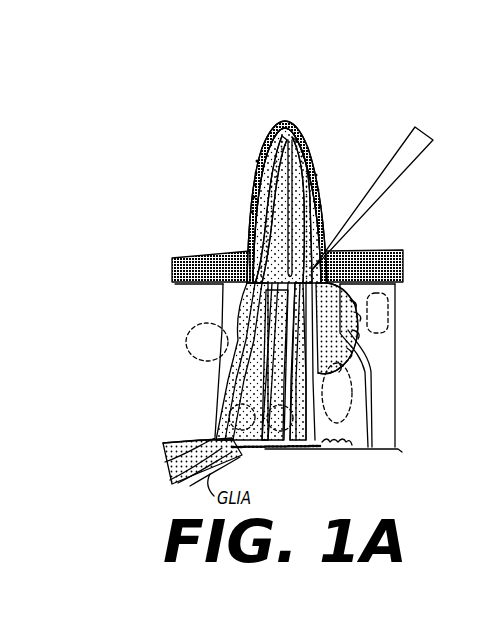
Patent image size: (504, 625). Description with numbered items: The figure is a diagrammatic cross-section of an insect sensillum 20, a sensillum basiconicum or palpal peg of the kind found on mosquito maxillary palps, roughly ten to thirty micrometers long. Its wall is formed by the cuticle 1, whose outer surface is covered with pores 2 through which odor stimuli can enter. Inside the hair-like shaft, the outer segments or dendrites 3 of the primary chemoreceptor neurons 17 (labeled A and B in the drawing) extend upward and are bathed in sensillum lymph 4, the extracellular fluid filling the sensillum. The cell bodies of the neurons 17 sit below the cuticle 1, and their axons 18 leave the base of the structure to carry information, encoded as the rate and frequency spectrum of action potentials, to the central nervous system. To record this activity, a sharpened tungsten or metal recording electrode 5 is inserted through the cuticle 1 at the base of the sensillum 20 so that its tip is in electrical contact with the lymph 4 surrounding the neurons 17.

The sensillum 20 is at (297, 104).
The cuticle 1 is at (259, 157).
The pores 2 is at (259, 173).
The dendrites 3 is at (254, 193).
The sensillum lymph 4 is at (250, 208).
The recording electrode 5 is at (410, 147).
The chemoreceptor neurons 17 is at (278, 432).
The axons 18 is at (167, 476).